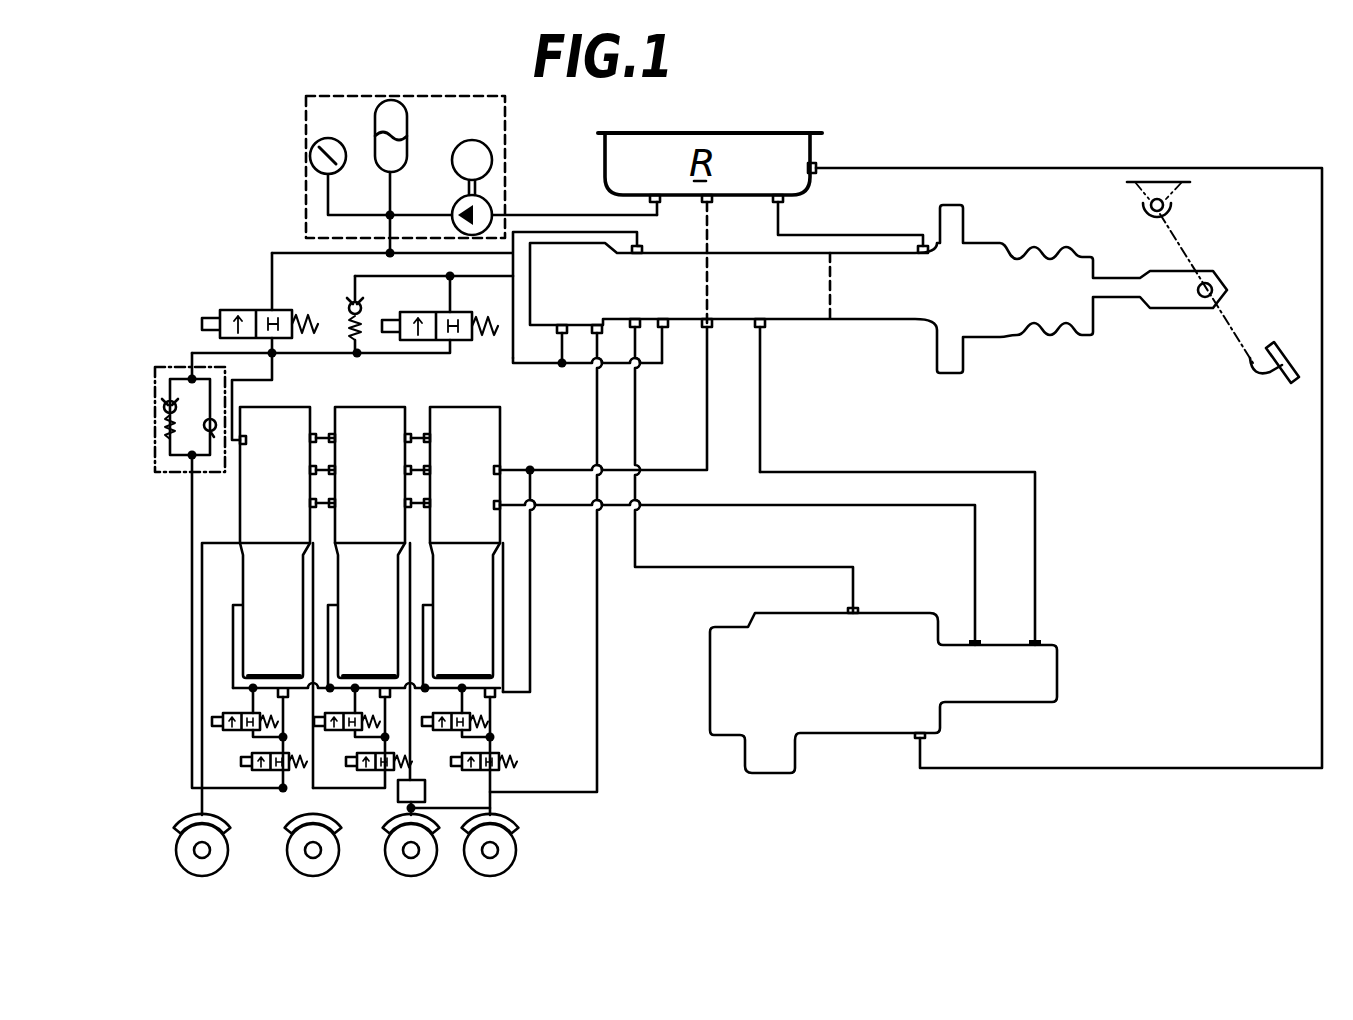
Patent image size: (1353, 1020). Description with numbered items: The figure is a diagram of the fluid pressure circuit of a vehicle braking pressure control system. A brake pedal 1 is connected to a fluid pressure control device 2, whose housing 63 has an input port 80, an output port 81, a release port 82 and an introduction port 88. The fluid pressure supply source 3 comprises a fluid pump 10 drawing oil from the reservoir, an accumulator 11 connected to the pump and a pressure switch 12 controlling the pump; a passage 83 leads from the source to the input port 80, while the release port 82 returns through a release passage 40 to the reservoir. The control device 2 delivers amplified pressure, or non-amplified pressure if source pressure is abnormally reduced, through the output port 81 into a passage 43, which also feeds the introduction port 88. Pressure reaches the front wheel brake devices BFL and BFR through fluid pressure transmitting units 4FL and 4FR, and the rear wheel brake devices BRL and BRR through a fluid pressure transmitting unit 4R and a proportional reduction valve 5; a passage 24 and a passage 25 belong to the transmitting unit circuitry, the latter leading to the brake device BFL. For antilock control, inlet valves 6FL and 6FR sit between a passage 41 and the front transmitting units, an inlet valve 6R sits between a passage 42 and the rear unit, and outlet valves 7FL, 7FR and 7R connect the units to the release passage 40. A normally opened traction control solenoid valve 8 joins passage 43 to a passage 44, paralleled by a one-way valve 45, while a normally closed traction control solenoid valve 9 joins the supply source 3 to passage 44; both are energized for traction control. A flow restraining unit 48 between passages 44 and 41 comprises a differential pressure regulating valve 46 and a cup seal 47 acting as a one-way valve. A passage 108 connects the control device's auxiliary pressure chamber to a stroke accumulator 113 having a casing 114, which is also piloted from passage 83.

The brake pedal 1 is at (1290, 362).
The fluid pressure control device 2 is at (850, 323).
The fluid pressure supply source 3 is at (505, 152).
The fluid pressure transmitting unit 4FR is at (278, 475).
The fluid pressure transmitting unit 4FL is at (363, 475).
The fluid pressure transmitting unit 4R is at (455, 475).
The proportional reduction valve 5 is at (420, 782).
The inlet valve 6FR is at (278, 772).
The inlet valve 6FL is at (380, 772).
The inlet valve 6R is at (480, 770).
The outlet valve 7FR is at (250, 686).
The outlet valve 7FL is at (345, 686).
The outlet valve 7R is at (443, 686).
The normally opened type traction control solenoid valve 8 is at (462, 312).
The normally closed type traction control solenoid valve 9 is at (258, 310).
The fluid pump 10 is at (484, 208).
The accumulator 11 is at (407, 117).
The pressure switch 12 is at (344, 152).
The passage 24 is at (812, 508).
The passage 25 is at (320, 580).
The release passage 40 is at (563, 470).
The passage 41 is at (184, 628).
The passage 42 is at (597, 560).
The passage 43 is at (513, 355).
The passage 44 is at (321, 357).
The one-way valve 45 is at (350, 306).
The differential pressure regulating valve 46 is at (165, 445).
The cup seal 47 is at (213, 436).
The flow restraining unit 48 is at (172, 367).
The housing 63 is at (797, 325).
The input port 80 is at (637, 248).
The output port 81 is at (665, 328).
The release port 82 is at (708, 252).
The passage 83 is at (640, 548).
The introduction port 88 is at (587, 349).
The passage 108 is at (884, 472).
The stroke accumulator 113 is at (890, 612).
The casing 114 is at (850, 722).
The right front wheel brake device BFR is at (181, 838).
The left front wheel brake device BFL is at (292, 842).
The right rear wheel brake device BRR is at (388, 845).
The left rear wheel brake device BRL is at (518, 848).